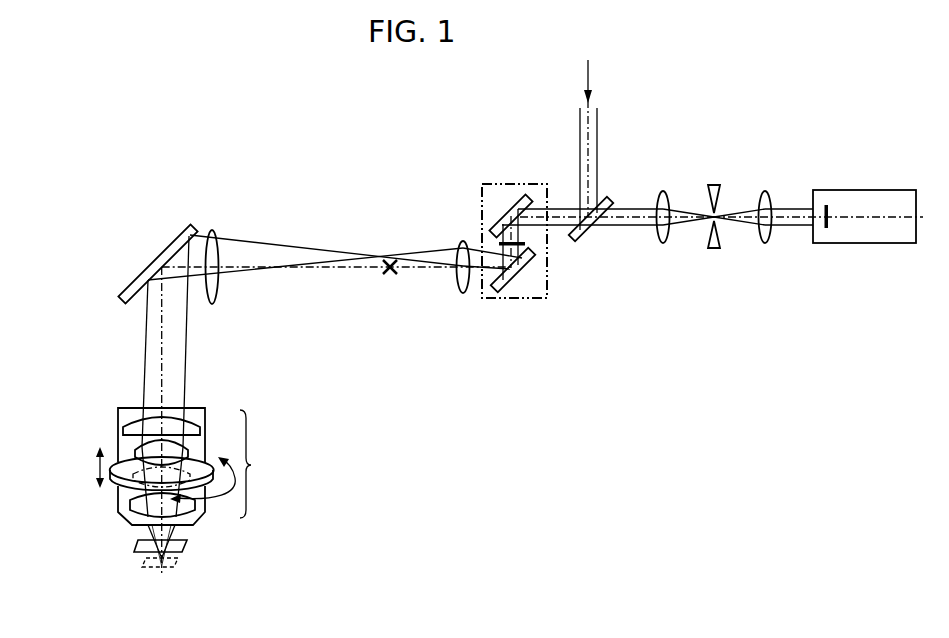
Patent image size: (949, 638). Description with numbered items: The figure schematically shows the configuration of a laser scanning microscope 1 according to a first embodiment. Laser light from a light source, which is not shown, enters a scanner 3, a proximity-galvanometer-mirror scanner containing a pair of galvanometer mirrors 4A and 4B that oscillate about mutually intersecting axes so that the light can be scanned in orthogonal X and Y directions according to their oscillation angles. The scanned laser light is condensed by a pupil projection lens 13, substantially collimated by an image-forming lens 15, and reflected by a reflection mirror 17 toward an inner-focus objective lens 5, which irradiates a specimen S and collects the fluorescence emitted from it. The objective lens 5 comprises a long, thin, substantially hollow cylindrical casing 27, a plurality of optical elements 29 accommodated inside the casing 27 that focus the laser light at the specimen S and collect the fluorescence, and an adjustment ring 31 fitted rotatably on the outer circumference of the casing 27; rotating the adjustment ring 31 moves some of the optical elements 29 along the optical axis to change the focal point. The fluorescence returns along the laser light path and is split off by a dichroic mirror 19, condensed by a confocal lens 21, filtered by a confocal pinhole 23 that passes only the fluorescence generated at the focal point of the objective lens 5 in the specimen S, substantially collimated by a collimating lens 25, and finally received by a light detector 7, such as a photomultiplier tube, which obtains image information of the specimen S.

The laser scanning microscope 1 is at (154, 107).
The scanner 3 is at (511, 182).
The galvanometer mirror 4A is at (496, 205).
The galvanometer mirror 4B is at (517, 289).
The inner-focus objective lens 5 is at (108, 396).
The light detector 7 is at (862, 189).
The pupil projection lens 13 is at (463, 293).
The image-forming lens 15 is at (212, 229).
The reflection mirror 17 is at (150, 255).
The dichroic mirror 19 is at (592, 244).
The confocal lens 21 is at (663, 245).
The confocal pinhole 23 is at (714, 250).
The collimating lens 25 is at (765, 245).
The casing 27 is at (118, 430).
The optical elements 29 is at (259, 464).
The adjustment ring 31 is at (130, 487).
The specimen S is at (189, 542).